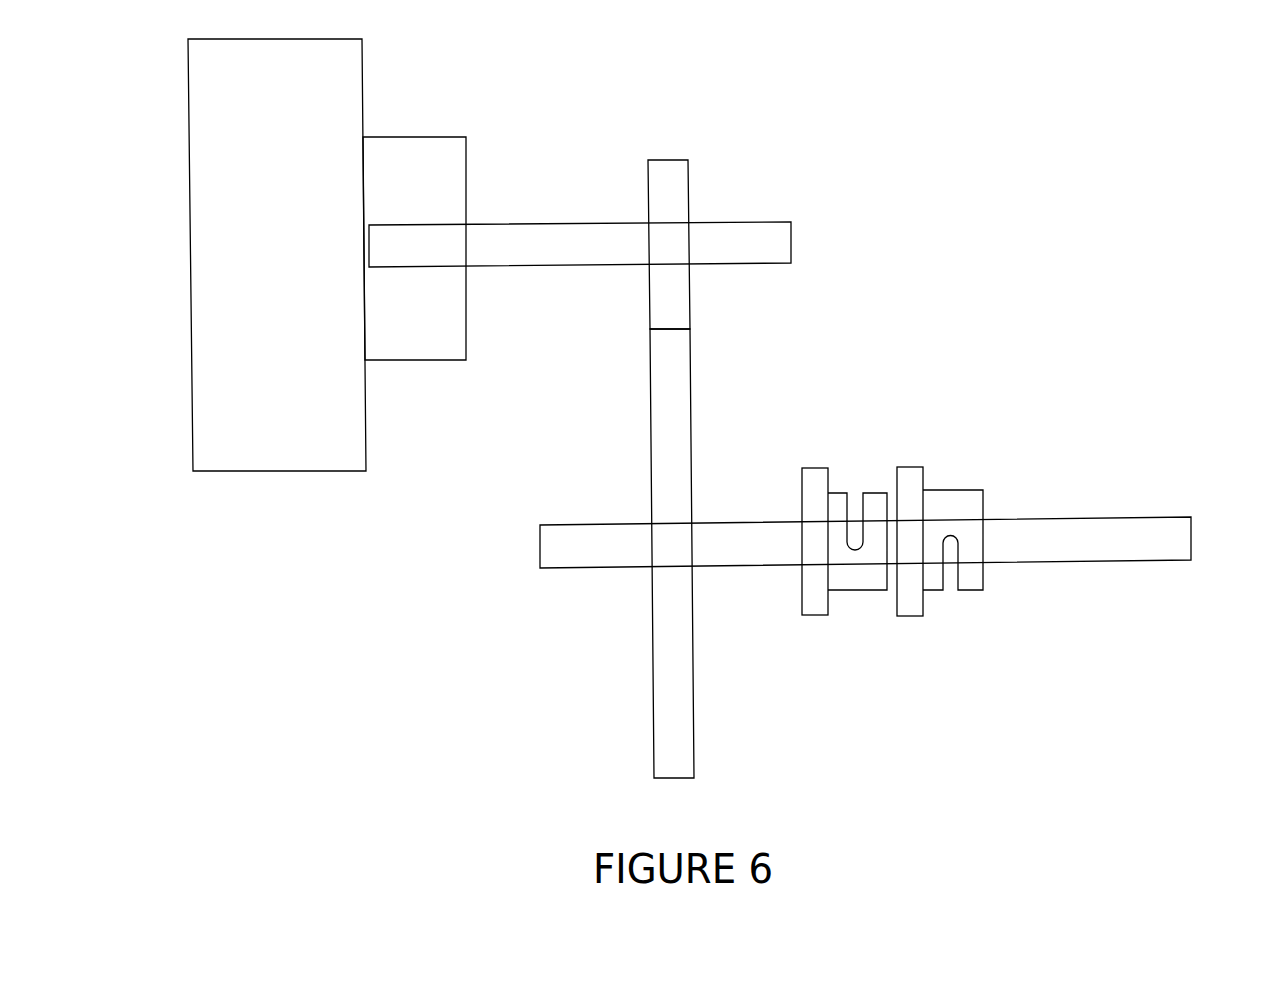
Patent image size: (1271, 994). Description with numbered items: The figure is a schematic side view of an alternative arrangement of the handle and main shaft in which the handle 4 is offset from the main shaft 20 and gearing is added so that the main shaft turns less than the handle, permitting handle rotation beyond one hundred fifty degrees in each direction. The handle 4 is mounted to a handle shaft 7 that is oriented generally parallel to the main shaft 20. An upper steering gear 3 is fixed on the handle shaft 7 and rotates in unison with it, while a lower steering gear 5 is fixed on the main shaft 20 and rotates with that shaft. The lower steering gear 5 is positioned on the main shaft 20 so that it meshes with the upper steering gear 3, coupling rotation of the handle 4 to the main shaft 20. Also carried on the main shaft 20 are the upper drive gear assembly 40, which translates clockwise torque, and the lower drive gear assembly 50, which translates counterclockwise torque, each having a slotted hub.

The handle 4 is at (428, 130).
The upper steering gear 3 is at (678, 182).
The lower steering gear 5 is at (682, 438).
The handle shaft 7 is at (768, 232).
The main shaft 20 is at (1092, 528).
The upper drive gear assembly 40 is at (840, 495).
The lower drive gear assembly 50 is at (957, 493).